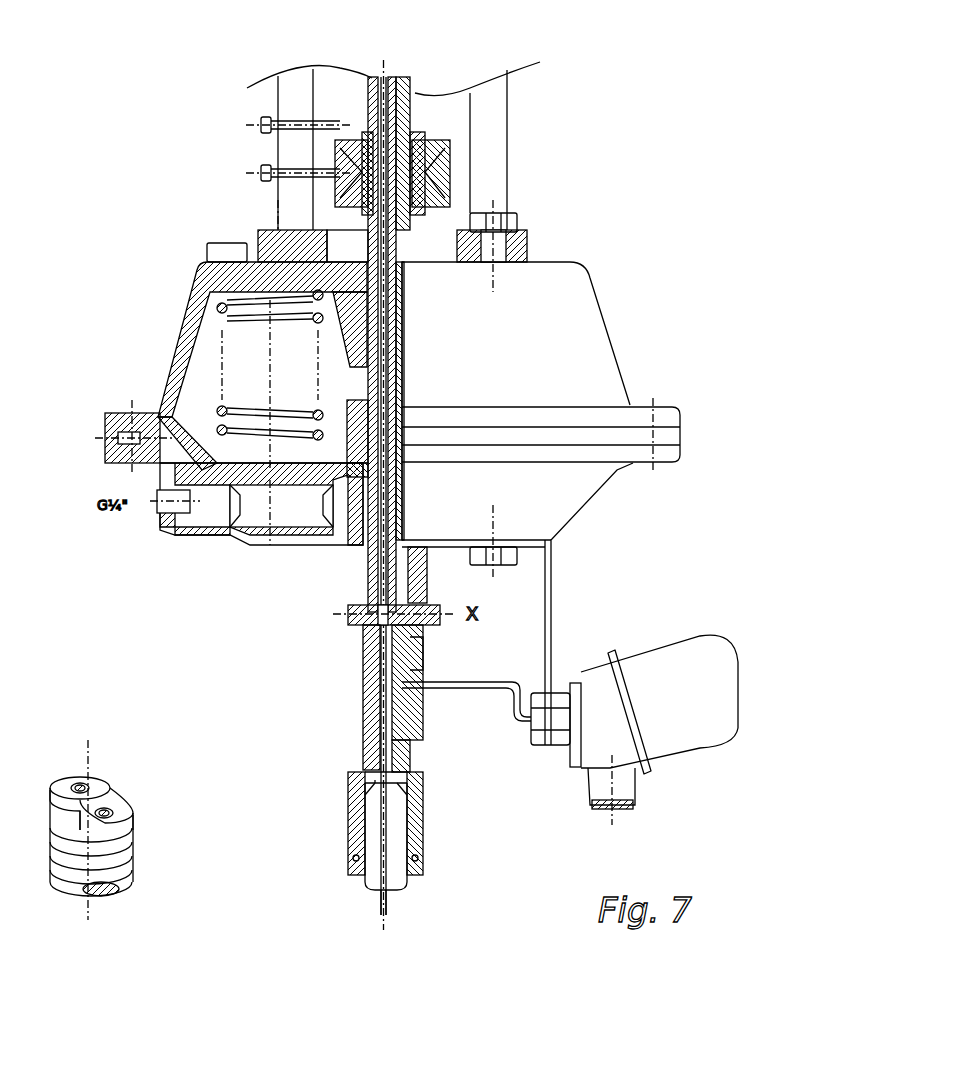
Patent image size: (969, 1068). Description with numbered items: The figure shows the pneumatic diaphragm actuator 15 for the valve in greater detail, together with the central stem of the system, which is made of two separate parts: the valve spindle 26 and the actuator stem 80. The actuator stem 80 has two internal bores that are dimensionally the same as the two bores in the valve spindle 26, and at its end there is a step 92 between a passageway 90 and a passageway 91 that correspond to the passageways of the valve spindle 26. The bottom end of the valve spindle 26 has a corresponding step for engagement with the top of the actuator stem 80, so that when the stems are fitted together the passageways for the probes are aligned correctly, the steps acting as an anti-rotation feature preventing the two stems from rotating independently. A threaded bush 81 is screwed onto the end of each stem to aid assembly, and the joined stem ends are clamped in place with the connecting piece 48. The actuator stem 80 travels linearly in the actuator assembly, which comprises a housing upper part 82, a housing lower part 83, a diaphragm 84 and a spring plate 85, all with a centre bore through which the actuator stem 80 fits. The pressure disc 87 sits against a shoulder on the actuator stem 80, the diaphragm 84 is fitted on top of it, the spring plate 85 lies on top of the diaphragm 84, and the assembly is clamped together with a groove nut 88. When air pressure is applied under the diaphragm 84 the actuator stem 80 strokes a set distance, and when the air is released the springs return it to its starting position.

The pneumatic diaphragm actuator 15 is at (555, 343).
The valve spindle 26 is at (417, 93).
The connecting piece 48 is at (457, 185).
The actuator stem 80 is at (365, 575).
The threaded bush 81 is at (440, 130).
The housing upper part 82 is at (288, 415).
The housing lower part 83 is at (120, 457).
The diaphragm 84 is at (262, 415).
The spring plate 85 is at (220, 423).
The pressure disc 87 is at (398, 490).
The groove nut 88 is at (360, 412).
The passageway 90 is at (82, 780).
The passageway 91 is at (123, 807).
The step 92 is at (100, 795).